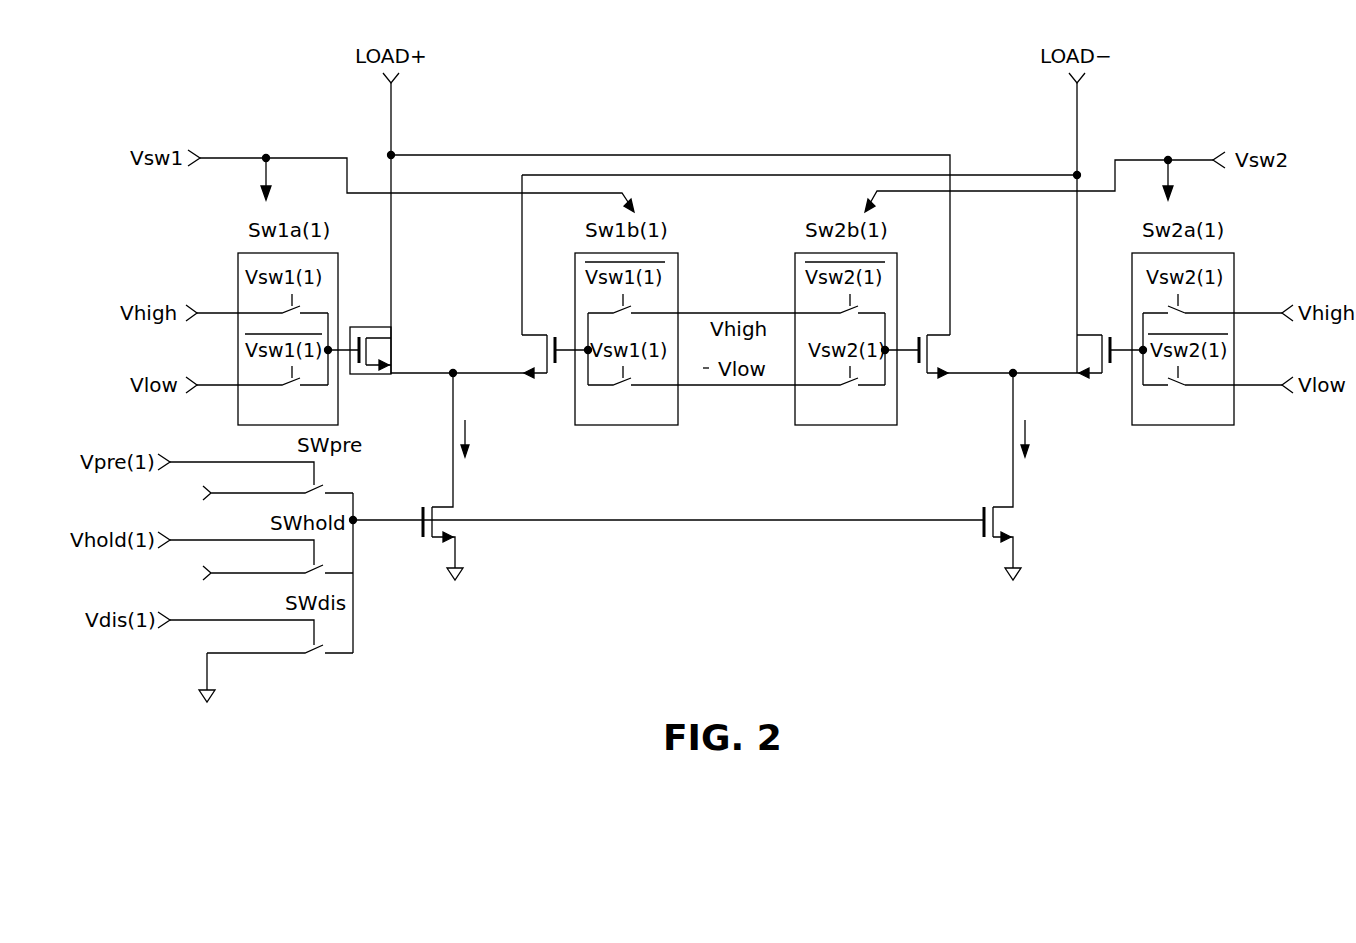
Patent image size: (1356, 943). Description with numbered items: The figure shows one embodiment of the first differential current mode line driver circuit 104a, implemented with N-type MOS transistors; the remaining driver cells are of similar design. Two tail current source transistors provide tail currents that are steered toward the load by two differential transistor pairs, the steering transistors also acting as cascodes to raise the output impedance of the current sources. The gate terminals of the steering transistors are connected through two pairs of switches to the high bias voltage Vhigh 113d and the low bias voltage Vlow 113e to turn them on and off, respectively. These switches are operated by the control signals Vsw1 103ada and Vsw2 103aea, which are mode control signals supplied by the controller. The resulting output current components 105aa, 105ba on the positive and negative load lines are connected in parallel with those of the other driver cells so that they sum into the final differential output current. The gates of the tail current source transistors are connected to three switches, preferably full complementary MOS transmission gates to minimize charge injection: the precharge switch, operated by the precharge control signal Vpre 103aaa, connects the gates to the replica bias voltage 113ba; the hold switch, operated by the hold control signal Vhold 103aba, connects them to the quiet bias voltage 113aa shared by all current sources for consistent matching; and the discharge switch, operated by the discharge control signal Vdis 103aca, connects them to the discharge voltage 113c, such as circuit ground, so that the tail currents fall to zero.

The control signal Vsw1 103ada is at (233, 157).
The output current component 105aa is at (393, 134).
The output current component 105ba is at (1076, 134).
The control signal Vsw2 103aea is at (1186, 157).
The high bias voltage Vhigh 113d is at (196, 310).
The low bias voltage Vlow 113e is at (196, 382).
The precharge control signal Vpre(1) 103aaa is at (259, 460).
The replica bias voltage 113ba is at (290, 492).
The hold control signal Vhold(1) 103aba is at (259, 538).
The quiet bias voltage 113aa is at (290, 571).
The discharge control signal Vdis(1) 103aca is at (259, 618).
The discharge voltage 113c is at (290, 651).
The first differential current mode line driver circuit 104a is at (688, 646).